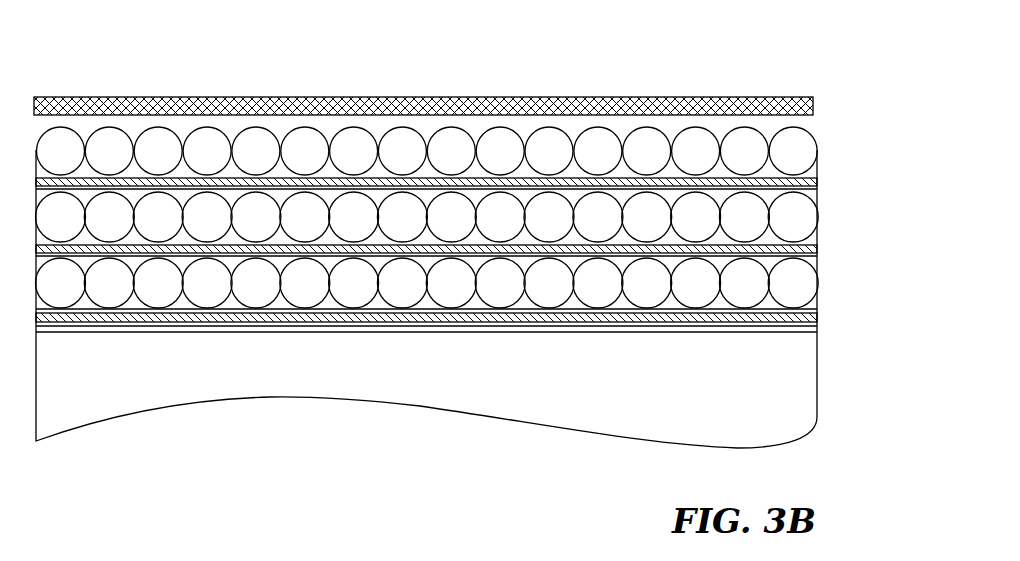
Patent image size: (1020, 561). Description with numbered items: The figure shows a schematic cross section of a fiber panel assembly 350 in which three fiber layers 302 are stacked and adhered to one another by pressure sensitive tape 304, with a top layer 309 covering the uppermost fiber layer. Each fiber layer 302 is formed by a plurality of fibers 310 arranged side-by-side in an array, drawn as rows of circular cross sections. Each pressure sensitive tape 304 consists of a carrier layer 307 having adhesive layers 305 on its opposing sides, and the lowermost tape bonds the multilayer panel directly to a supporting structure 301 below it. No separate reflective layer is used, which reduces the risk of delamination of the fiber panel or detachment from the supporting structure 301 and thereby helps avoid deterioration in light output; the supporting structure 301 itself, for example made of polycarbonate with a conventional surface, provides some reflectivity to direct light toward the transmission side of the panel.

The vehicle armor structure 350 is at (136, 52).
The supporting structure 301 is at (612, 396).
The optical fiber layer 302 is at (469, 220).
The pressure sensitive tape 304 is at (485, 251).
The adhesive layer 305 is at (456, 311).
The carrier layer 307 is at (818, 316).
The top cover layer 309 is at (445, 97).
The fibers 310 is at (206, 137).